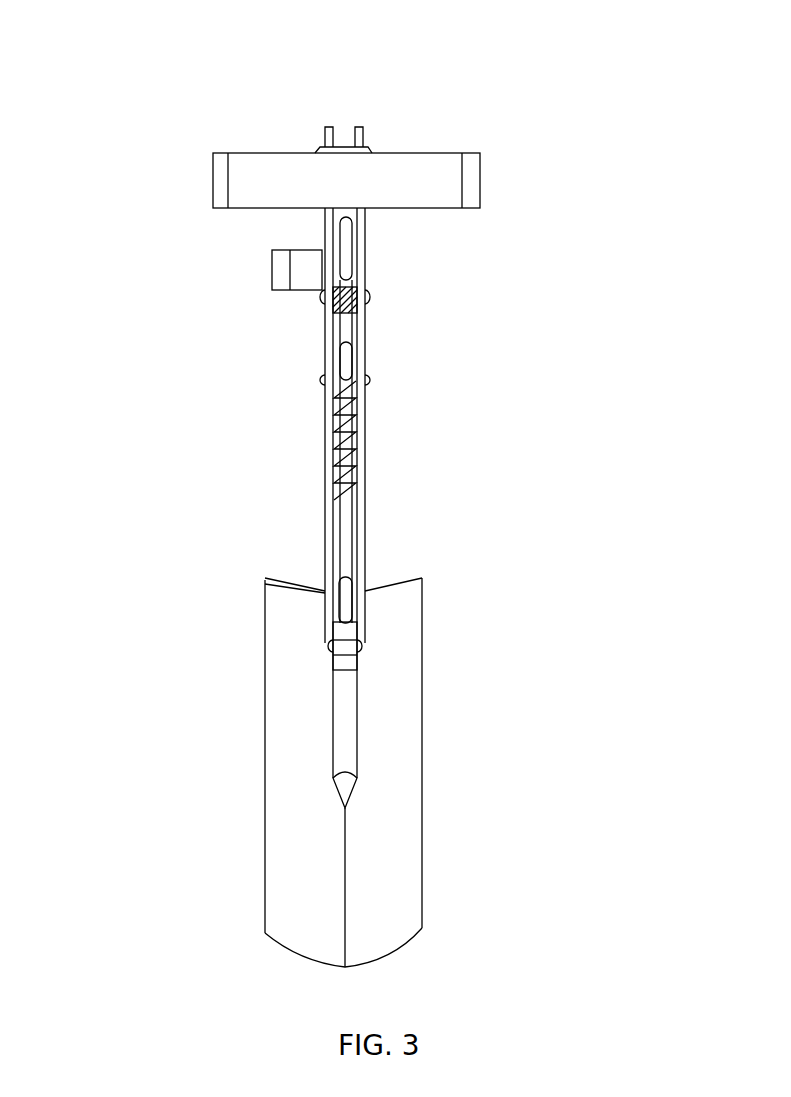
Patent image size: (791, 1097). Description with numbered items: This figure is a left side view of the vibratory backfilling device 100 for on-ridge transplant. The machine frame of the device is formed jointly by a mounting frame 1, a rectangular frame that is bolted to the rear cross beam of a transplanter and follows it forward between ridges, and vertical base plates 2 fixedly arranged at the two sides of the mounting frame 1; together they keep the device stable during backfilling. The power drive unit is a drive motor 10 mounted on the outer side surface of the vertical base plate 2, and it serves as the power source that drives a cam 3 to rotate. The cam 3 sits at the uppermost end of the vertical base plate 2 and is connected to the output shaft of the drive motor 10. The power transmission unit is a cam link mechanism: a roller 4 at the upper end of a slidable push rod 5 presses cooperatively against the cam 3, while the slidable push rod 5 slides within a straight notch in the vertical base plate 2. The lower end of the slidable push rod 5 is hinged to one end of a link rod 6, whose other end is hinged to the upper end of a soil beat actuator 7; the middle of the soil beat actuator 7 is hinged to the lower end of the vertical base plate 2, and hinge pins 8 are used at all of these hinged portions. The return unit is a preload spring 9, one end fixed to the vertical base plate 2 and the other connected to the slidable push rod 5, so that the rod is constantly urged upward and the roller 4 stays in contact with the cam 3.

The vibratory backfilling device 100 is at (466, 115).
The mounting frame 1 is at (433, 185).
The vertical base plate 2 is at (365, 233).
The cam 3 is at (365, 248).
The roller 4 is at (365, 313).
The slidable push rod 5 is at (365, 360).
The link rod 6 is at (340, 480).
The soil beat actuator 7 is at (288, 687).
The hinge pin 8 is at (327, 380).
The preload spring 9 is at (350, 397).
The drive motor 10 is at (307, 272).